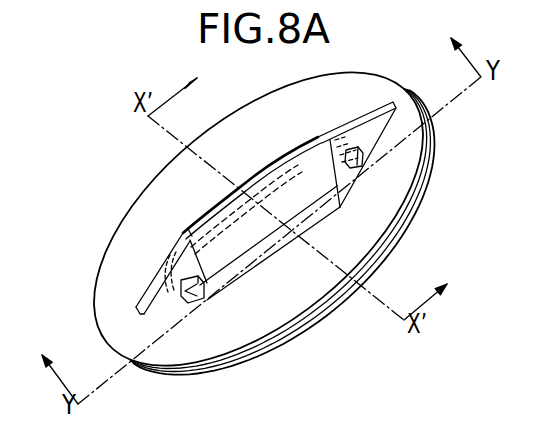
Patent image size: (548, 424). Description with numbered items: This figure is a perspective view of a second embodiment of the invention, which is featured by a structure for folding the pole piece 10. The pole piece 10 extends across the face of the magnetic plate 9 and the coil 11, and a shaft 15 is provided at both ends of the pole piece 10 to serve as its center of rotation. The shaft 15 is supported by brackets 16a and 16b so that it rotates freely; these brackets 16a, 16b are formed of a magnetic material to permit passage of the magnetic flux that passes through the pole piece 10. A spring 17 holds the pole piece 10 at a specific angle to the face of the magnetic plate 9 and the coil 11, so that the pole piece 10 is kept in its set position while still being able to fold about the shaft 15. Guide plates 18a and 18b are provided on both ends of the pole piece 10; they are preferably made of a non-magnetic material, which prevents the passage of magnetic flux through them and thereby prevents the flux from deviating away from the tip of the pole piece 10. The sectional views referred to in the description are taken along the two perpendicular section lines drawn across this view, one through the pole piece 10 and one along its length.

The magnetic plate 9 is at (363, 270).
The pole piece 10 is at (295, 203).
The coil 11 is at (425, 157).
The shaft 15 is at (205, 298).
The bracket 16a is at (197, 302).
The bracket 16b is at (364, 156).
The spring 17 is at (348, 172).
The guide plate 18a is at (157, 299).
The guide plate 18b is at (362, 124).